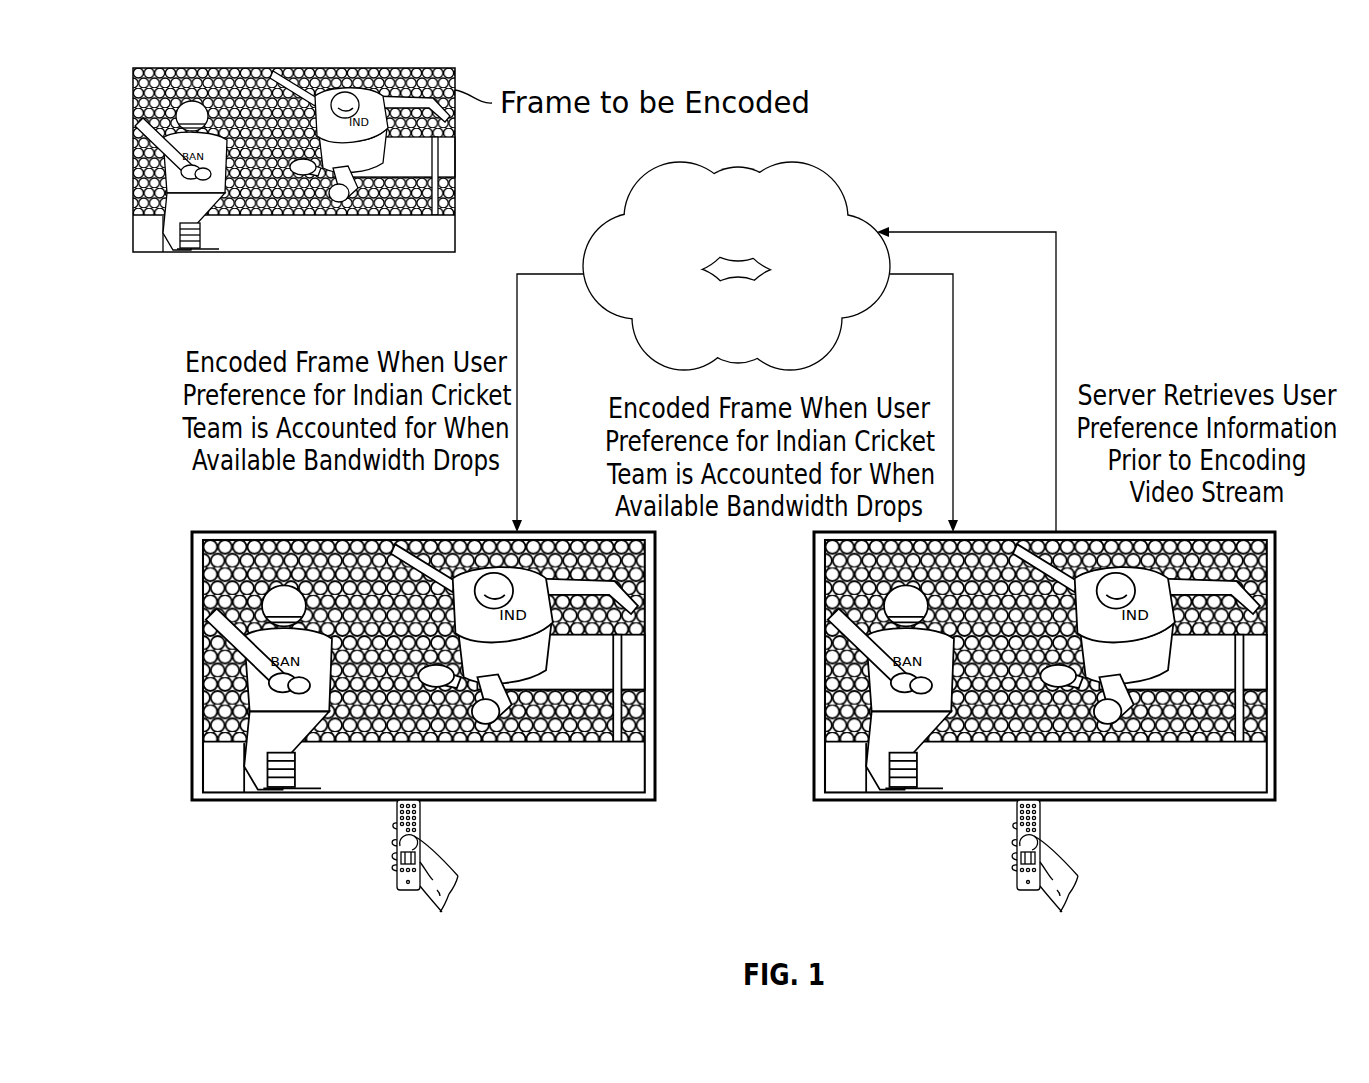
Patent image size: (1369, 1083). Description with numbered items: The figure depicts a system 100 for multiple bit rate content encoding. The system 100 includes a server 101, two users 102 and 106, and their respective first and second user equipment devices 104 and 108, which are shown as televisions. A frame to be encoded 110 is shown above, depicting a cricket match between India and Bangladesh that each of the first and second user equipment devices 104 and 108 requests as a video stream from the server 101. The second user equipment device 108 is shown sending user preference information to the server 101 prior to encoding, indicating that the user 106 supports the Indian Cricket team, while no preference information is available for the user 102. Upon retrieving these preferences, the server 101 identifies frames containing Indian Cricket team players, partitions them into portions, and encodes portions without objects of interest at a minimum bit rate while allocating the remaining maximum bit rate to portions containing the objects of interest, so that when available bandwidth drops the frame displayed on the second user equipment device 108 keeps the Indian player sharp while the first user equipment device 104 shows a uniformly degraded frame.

The system 100 is at (1199, 121).
The server 101 is at (733, 162).
The frame to be encoded 110 is at (385, 252).
The first user equipment device 104 is at (262, 801).
The second user equipment device 108 is at (880, 801).
The user 102 is at (453, 892).
The user 106 is at (1078, 892).